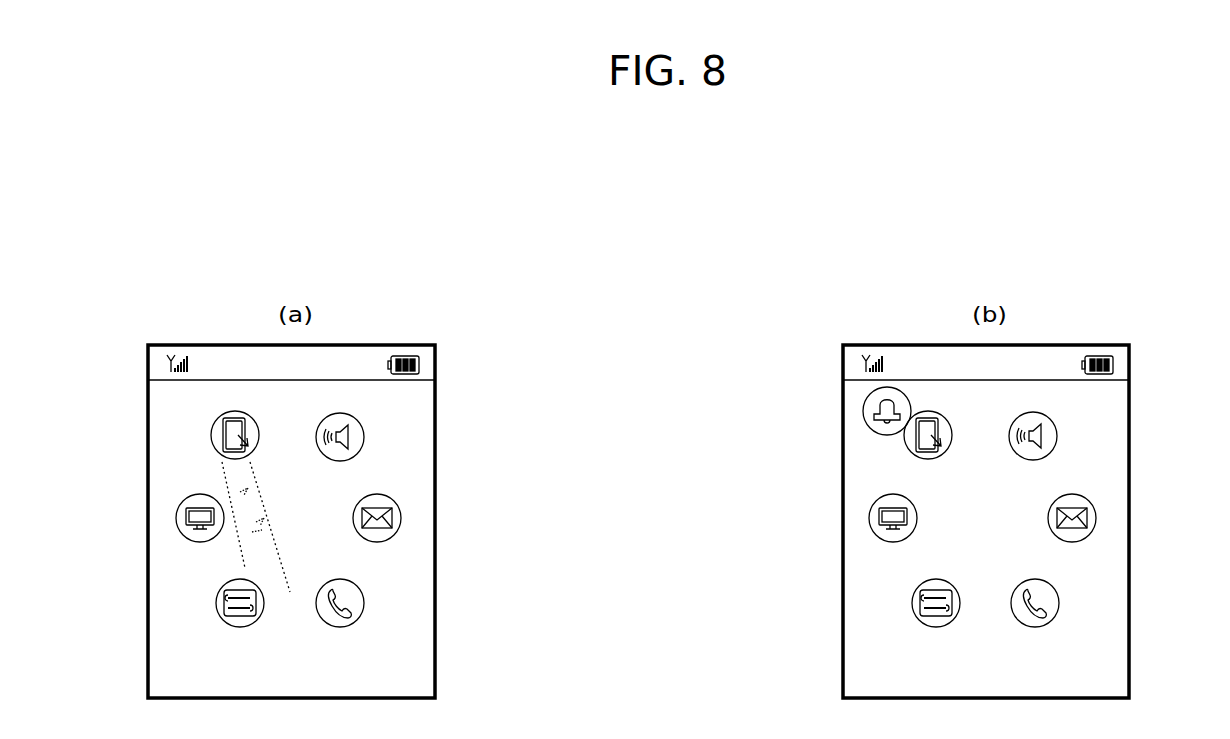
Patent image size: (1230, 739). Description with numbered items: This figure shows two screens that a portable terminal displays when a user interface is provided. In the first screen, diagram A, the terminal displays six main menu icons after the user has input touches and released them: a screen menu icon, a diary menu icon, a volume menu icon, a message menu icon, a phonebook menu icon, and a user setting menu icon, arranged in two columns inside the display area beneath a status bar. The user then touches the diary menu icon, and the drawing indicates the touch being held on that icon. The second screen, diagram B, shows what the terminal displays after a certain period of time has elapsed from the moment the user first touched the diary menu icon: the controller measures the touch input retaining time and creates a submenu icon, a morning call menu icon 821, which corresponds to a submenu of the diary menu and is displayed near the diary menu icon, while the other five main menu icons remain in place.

The morning call menu icon 821 is at (865, 420).